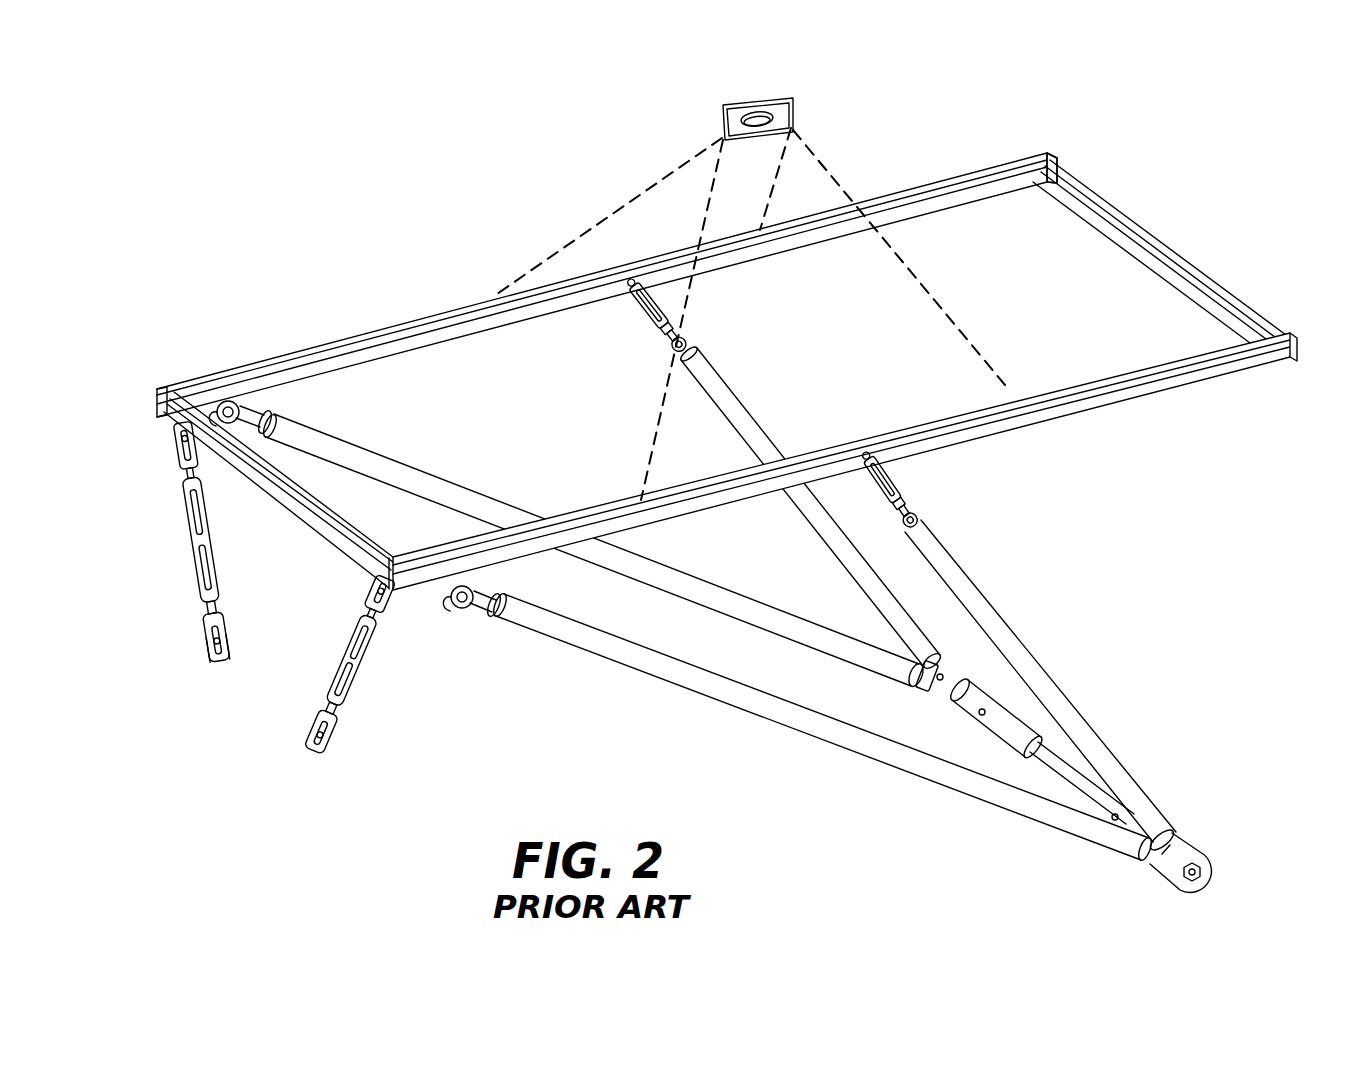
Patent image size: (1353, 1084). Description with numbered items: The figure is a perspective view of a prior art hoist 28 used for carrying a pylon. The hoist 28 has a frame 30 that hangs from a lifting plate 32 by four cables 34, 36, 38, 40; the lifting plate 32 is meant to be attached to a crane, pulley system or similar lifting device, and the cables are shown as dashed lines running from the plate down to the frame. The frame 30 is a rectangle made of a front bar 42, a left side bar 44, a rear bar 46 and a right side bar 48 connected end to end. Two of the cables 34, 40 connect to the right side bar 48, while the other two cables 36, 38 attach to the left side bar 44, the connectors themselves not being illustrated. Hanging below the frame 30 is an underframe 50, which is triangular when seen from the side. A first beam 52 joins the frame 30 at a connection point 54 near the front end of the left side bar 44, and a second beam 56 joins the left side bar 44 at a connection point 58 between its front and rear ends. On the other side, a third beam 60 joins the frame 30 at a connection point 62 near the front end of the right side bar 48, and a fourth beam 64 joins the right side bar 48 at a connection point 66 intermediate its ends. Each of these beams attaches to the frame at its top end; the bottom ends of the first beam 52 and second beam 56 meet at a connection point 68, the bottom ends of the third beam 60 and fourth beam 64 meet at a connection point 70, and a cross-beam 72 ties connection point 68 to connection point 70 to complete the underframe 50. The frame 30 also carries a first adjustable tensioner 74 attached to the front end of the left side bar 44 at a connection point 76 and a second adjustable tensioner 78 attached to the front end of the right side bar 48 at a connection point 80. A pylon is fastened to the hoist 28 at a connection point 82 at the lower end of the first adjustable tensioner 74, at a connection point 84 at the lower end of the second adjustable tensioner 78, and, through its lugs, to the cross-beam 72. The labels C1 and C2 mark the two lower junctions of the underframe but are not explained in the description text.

The hoist 28 is at (1147, 208).
The frame 30 is at (1060, 148).
The lifting plate 32 is at (722, 118).
The cable 34 is at (655, 172).
The cable 36 is at (690, 302).
The cable 38 is at (848, 183).
The cable 40 is at (782, 183).
The front bar 42 is at (282, 505).
The left side bar 44 is at (1133, 402).
The rear bar 46 is at (1177, 257).
The right side bar 48 is at (357, 337).
The underframe 50 is at (1117, 650).
The first beam 52 is at (755, 712).
The connection point 54 is at (455, 613).
The second beam 56 is at (1045, 665).
The connection point 58 is at (897, 477).
The third beam 60 is at (700, 592).
The connection point 62 is at (270, 392).
The fourth beam 64 is at (760, 418).
The connection point 66 is at (642, 315).
The connection point 68 is at (1196, 848).
The connection point 70 is at (957, 668).
The cross-beam 72 is at (1022, 732).
The first adjustable tensioner 74 is at (365, 668).
The connection point 76 is at (385, 593).
The second adjustable tensioner 78 is at (188, 545).
The connection point 80 is at (170, 450).
The connection point 82 is at (325, 735).
The connection point 84 is at (205, 655).
The first connection point C1 is at (983, 713).
The second connection point C2 is at (1093, 822).